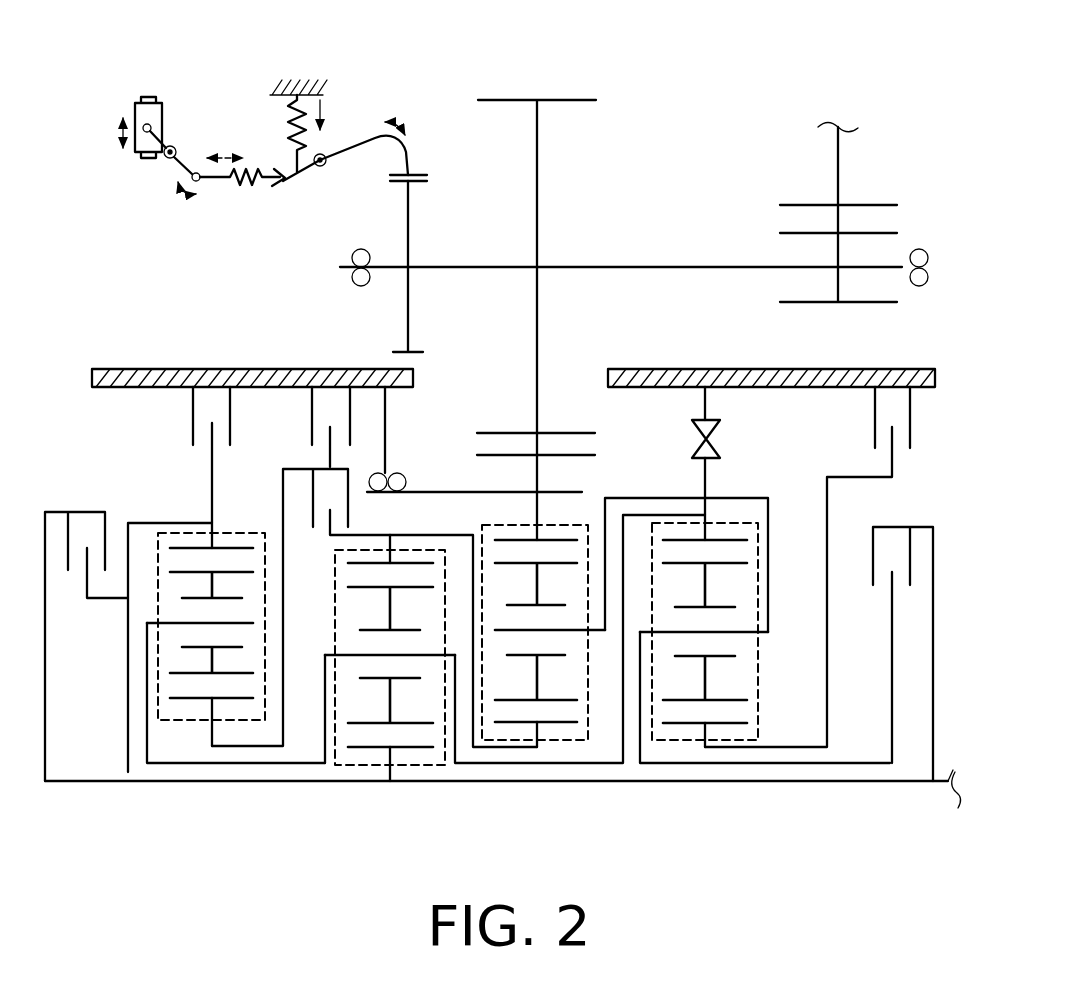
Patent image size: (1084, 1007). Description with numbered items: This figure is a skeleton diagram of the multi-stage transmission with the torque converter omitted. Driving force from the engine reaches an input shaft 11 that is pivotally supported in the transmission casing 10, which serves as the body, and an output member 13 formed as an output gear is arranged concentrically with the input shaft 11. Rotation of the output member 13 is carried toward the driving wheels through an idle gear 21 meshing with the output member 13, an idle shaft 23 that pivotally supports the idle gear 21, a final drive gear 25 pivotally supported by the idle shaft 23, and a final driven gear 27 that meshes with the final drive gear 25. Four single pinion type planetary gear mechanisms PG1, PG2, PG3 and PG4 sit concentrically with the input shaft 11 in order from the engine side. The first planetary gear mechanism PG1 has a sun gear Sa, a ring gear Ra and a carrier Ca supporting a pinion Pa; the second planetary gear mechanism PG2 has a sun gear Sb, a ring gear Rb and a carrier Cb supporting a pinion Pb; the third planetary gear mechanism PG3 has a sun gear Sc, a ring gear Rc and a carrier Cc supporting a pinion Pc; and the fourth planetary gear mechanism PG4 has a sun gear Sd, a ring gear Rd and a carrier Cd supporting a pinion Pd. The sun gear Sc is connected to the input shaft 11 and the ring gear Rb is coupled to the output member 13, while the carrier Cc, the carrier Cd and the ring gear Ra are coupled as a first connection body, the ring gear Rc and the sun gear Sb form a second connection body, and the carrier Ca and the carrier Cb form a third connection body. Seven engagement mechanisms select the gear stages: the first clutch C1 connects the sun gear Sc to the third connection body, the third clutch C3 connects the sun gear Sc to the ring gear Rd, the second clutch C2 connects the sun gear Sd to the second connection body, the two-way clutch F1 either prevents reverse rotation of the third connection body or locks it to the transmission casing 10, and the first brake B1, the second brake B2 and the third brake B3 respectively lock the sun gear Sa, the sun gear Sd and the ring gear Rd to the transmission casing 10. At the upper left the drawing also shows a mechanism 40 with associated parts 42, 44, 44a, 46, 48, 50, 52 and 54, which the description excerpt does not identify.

The transmission casing 10 is at (184, 369).
The input shaft 11 is at (950, 794).
The output member 13 is at (583, 455).
The idle gear 21 is at (535, 98).
The idle shaft 23 is at (663, 265).
The final drive gear 25 is at (790, 232).
The final driven gear 27 is at (870, 208).
The parking lock mechanism 40 is at (210, 72).
The shaft 42 is at (392, 179).
The lever 44 is at (352, 137).
The pivot of lever 44a is at (318, 168).
The sleeve 46 is at (428, 178).
The return spring 48 is at (292, 140).
The rod 50 is at (220, 184).
The detent lever 52 is at (188, 163).
The actuator 54 is at (133, 115).
The first brake B1 is at (807, 567).
The second brake B2 is at (331, 427).
The third brake B3 is at (211, 467).
The first clutch C1 is at (903, 654).
The second clutch C2 is at (374, 608).
The third clutch C3 is at (128, 646).
The two-way clutch F1 is at (724, 440).
The first planetary gear mechanism PG1 is at (688, 750).
The second planetary gear mechanism PG2 is at (508, 750).
The third planetary gear mechanism PG3 is at (358, 768).
The fourth planetary gear mechanism PG4 is at (215, 530).
The ring gear Ra is at (720, 540).
The ring gear Rb is at (556, 540).
The ring gear Rc is at (362, 568).
The ring gear Rd is at (242, 548).
The carrier Ca is at (752, 632).
The carrier Cb is at (562, 630).
The carrier Cc is at (425, 655).
The carrier Cd is at (188, 623).
The pinion Pa is at (742, 700).
The pinion Pb is at (562, 700).
The pinion Pc is at (405, 723).
The pinion Pd is at (188, 676).
The sun gear Sa is at (725, 726).
The sun gear Sb is at (556, 725).
The sun gear Sc is at (414, 750).
The sun gear Sd is at (188, 700).